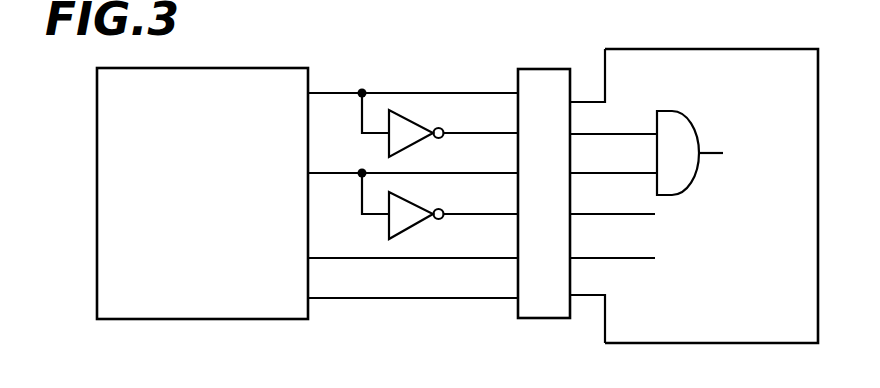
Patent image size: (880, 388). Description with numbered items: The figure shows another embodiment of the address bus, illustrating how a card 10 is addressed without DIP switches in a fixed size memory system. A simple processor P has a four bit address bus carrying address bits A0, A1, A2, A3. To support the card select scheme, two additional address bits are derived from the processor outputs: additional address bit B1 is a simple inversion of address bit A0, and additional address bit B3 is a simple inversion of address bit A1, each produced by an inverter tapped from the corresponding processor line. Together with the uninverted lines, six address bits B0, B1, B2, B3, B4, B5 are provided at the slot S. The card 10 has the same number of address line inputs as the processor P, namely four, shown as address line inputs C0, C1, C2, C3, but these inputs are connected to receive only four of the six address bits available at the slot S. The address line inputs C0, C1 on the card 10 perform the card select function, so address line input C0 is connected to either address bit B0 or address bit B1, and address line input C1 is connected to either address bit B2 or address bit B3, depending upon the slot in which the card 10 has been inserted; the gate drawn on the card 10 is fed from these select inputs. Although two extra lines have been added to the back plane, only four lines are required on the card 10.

The card 10 is at (762, 49).
The processor P is at (202, 193).
The slot S is at (544, 193).
The address bit A0 is at (391, 94).
The address bit A1 is at (391, 174).
The address bit A2 is at (391, 255).
The address bit A3 is at (391, 295).
The address bit B0 is at (499, 83).
The additional address bit B1 is at (481, 123).
The address bit B2 is at (499, 163).
The additional address bit B3 is at (481, 203).
The address bit B4 is at (499, 245).
The address bit B5 is at (499, 285).
The address line input C0 is at (613, 121).
The address line input C1 is at (613, 161).
The address line input C2 is at (612, 201).
The address line input C3 is at (612, 245).